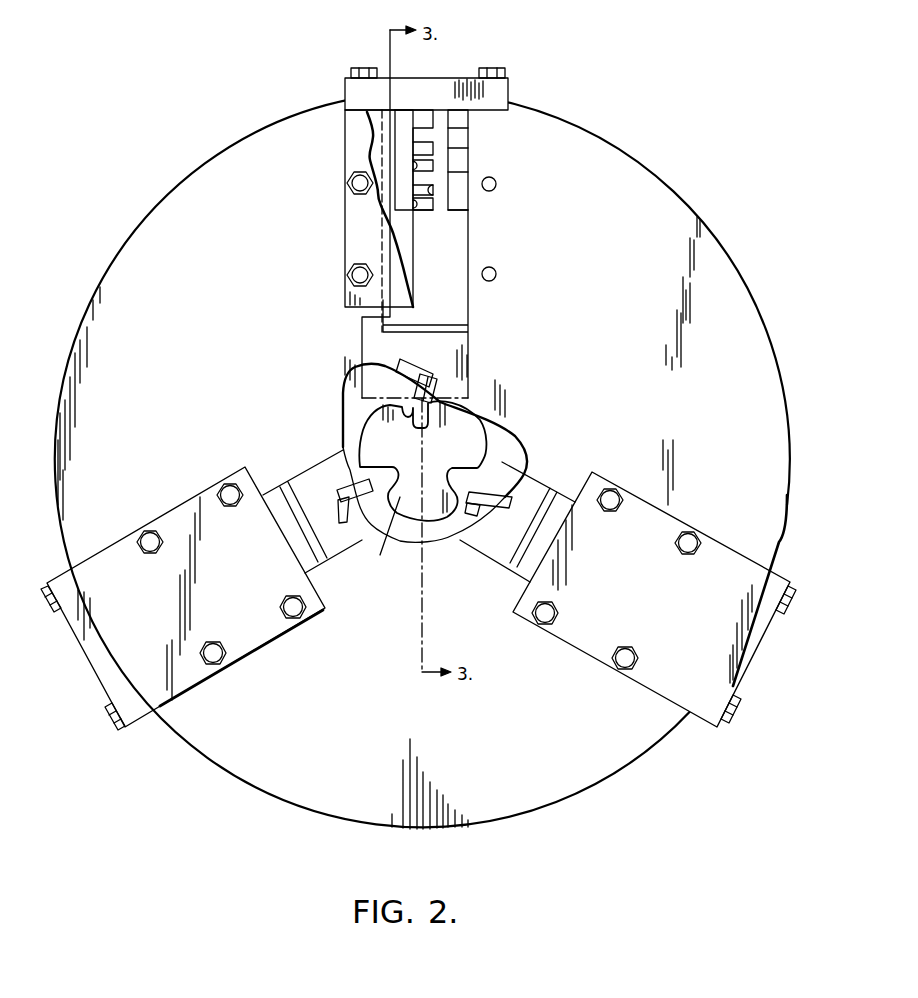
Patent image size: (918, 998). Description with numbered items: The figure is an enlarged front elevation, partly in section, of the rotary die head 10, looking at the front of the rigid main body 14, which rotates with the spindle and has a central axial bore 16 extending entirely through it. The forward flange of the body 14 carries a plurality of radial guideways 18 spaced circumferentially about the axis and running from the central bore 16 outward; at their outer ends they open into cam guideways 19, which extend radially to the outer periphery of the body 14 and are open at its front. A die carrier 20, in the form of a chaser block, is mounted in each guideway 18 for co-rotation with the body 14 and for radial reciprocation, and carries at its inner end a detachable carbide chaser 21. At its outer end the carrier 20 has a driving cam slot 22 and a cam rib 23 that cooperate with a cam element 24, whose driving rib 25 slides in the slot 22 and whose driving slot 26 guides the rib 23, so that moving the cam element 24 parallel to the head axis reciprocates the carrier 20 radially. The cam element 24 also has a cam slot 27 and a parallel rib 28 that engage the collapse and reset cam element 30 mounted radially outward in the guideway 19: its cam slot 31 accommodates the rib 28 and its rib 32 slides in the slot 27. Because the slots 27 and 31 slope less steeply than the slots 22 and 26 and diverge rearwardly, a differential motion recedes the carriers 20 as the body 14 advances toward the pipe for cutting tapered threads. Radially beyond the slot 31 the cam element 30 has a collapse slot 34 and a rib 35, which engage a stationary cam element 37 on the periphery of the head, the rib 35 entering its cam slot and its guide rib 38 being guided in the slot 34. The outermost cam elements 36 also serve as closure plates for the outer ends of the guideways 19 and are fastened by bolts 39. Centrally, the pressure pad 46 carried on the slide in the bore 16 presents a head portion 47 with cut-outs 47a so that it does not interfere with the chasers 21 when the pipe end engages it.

The die head 10 is at (779, 354).
The main body 14 is at (575, 796).
The central axial bore 16 is at (498, 442).
The radial guideways 18 is at (468, 278).
The cam guideways 19 is at (440, 205).
The die carrier 20 is at (450, 243).
The carbide chaser 21 is at (430, 406).
The driving cam slot 22 is at (413, 201).
The cam rib 23 is at (414, 185).
The cam element 24 is at (470, 171).
The driving rib 25 is at (435, 203).
The driving slot 26 is at (433, 192).
The cam slot 27 is at (395, 156).
The rib 28 is at (413, 147).
The collapse and reset cam element 30 is at (460, 147).
The cam slot 31 is at (433, 128).
The rib 32 is at (460, 172).
The collapse slot 34 is at (430, 128).
The rib 35 is at (413, 116).
The outermost cam element 36 is at (341, 79).
The stationary cam element 37 is at (436, 112).
The guide rib 38 is at (448, 110).
The bolts 39 is at (361, 67).
The pressure pad 46 is at (378, 558).
The head portion 47 is at (422, 460).
The cut-outs 47a is at (398, 410).